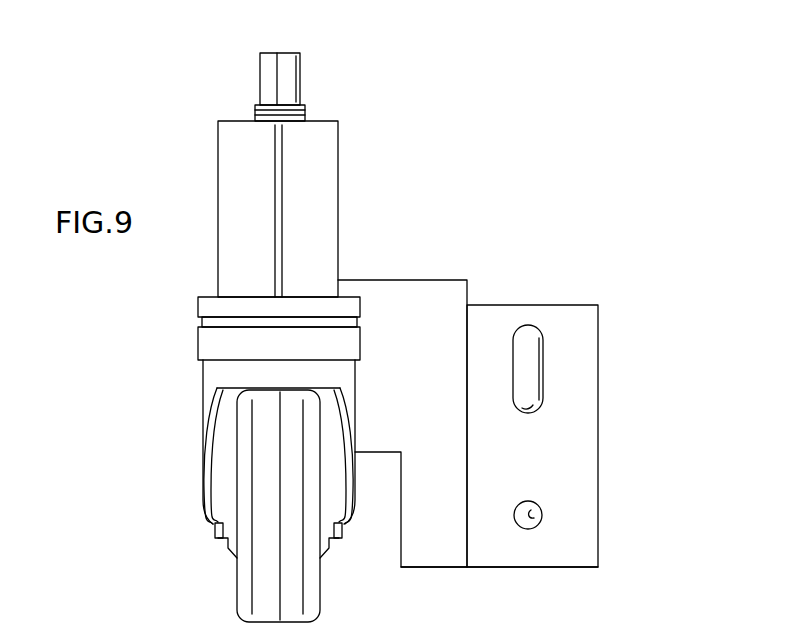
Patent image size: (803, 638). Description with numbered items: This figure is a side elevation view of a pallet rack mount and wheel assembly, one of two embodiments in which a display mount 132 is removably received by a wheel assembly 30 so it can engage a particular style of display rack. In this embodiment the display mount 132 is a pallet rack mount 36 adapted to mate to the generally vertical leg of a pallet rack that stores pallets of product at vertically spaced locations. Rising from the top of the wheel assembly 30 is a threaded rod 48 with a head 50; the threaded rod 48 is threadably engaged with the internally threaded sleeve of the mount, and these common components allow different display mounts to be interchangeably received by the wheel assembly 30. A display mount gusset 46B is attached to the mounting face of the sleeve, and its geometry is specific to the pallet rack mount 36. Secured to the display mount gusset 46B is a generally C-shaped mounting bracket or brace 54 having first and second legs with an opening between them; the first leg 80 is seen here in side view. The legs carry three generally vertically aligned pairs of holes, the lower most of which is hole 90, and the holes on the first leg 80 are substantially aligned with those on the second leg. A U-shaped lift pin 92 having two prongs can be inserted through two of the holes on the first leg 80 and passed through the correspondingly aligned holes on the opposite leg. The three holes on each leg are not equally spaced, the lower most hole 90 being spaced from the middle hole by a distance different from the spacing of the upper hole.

The wheel assembly 30 is at (249, 319).
The head 50 is at (296, 74).
The threaded rod 48 is at (304, 110).
The display mount 132 is at (530, 396).
The display mount gusset 46B is at (413, 292).
The pallet rack mount 36 is at (562, 457).
The first mounting flange or leg 80 is at (568, 436).
The U-shaped lift pin 92 is at (550, 364).
The hole 90 is at (541, 518).
The mounting bracket or brace 54 is at (541, 572).